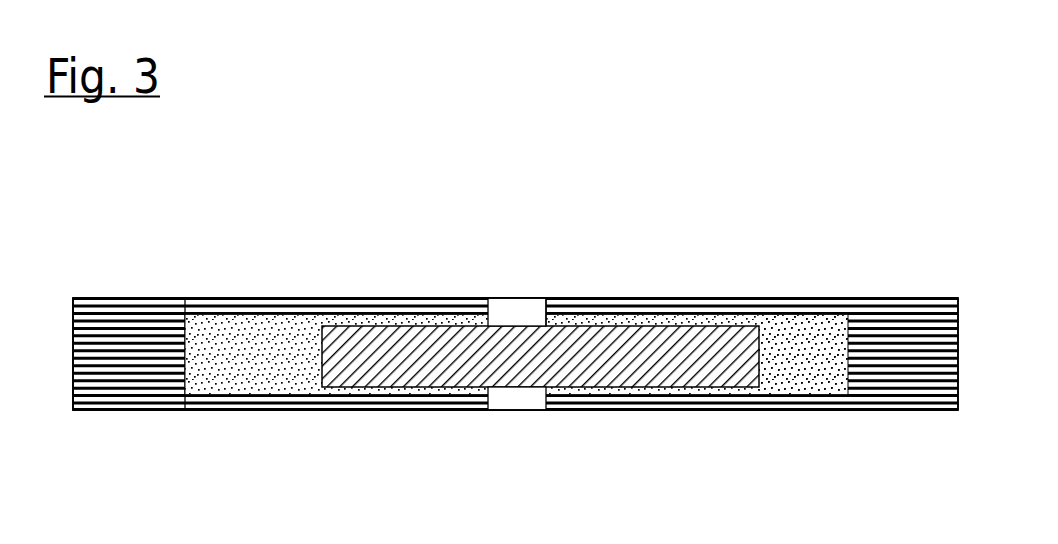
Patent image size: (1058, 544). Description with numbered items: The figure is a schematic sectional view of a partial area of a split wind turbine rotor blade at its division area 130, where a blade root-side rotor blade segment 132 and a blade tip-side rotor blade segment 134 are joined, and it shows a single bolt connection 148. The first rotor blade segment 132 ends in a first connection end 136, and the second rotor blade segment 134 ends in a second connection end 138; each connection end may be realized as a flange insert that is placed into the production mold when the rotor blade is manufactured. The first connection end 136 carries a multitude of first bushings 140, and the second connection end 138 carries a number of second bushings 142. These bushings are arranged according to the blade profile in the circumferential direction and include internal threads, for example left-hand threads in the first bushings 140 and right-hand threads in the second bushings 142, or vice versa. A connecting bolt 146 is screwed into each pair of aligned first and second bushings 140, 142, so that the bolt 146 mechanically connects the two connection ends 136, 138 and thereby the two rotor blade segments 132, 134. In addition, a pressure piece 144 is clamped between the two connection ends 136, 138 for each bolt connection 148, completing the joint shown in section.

The division area 130 is at (517, 426).
The blade root-side rotor blade segment 132 is at (126, 405).
The blade tip-side rotor blade segment 134 is at (895, 298).
The first connection end 136 is at (489, 298).
The second connection end 138 is at (543, 298).
The first bushings 140 is at (270, 400).
The second bushings 142 is at (817, 400).
The pressure piece 144 is at (500, 398).
The connecting bolt 146 is at (686, 400).
The bolt connection 148 is at (709, 208).